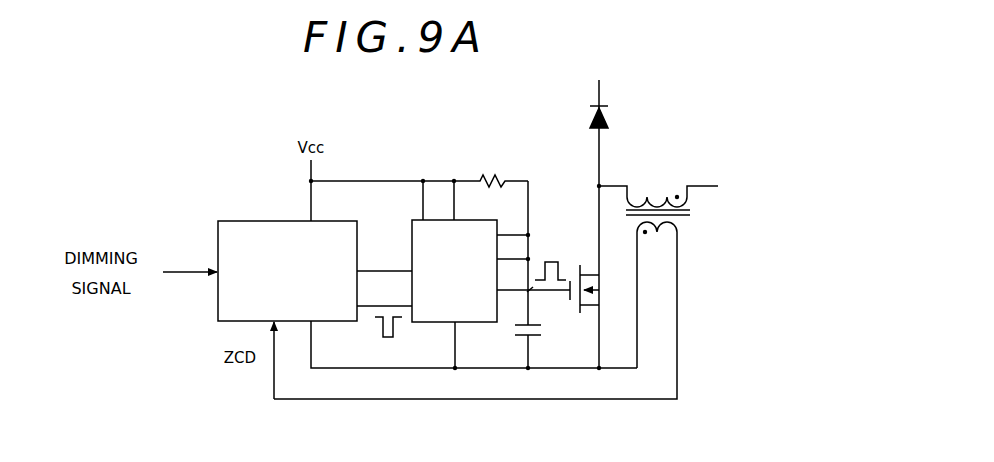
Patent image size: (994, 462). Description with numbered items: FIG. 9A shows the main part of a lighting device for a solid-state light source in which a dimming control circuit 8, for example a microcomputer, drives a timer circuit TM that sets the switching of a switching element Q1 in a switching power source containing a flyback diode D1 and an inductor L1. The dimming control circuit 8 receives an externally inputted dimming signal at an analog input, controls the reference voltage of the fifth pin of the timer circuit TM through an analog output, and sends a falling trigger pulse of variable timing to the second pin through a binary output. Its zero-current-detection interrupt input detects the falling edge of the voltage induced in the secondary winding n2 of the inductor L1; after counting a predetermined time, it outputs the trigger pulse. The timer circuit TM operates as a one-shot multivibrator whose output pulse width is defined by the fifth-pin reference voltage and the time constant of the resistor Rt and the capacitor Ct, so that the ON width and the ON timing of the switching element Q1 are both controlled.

The dimming control circuit 8 is at (258, 221).
The timer circuit TM is at (454, 271).
The resistor Rt is at (502, 166).
The capacitor Ct is at (541, 329).
The switching element Q1 is at (600, 289).
The flyback diode D1 is at (614, 119).
The inductor L1 is at (658, 189).
The secondary winding n2 is at (679, 295).